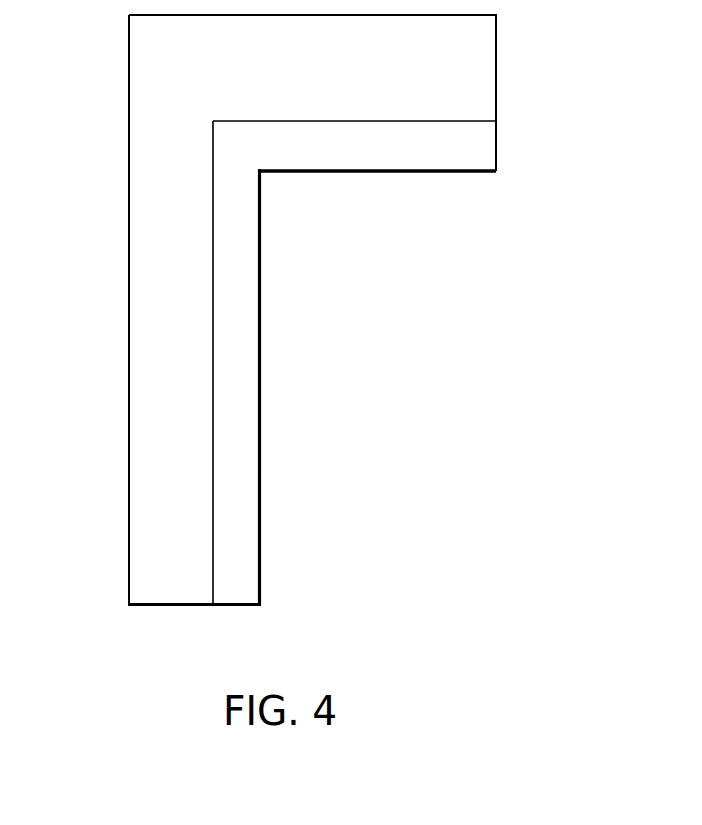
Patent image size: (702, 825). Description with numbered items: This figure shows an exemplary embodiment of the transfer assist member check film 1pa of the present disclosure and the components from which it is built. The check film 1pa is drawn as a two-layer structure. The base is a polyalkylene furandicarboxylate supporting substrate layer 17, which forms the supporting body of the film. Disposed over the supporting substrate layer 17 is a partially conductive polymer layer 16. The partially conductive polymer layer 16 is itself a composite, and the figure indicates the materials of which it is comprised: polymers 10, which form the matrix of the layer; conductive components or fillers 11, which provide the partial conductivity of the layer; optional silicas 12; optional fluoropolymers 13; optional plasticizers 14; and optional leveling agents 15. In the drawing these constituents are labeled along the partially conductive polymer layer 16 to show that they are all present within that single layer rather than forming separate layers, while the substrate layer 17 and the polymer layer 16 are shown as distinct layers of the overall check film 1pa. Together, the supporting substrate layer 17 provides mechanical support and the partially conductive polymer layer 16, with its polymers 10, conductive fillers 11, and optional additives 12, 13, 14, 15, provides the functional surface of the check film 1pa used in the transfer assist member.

The check film 1pa is at (117, 288).
The polymers 10 is at (236, 503).
The conductive components or fillers 11 is at (236, 443).
The optional silicas 12 is at (236, 384).
The optional fluoropolymers 13 is at (236, 323).
The optional plasticizers 14 is at (236, 265).
The optional leveling agents 15 is at (476, 146).
The partially conductive polymer layer 16 is at (235, 607).
The polyalkylene furandicarboxylate supporting substrate layer 17 is at (170, 607).